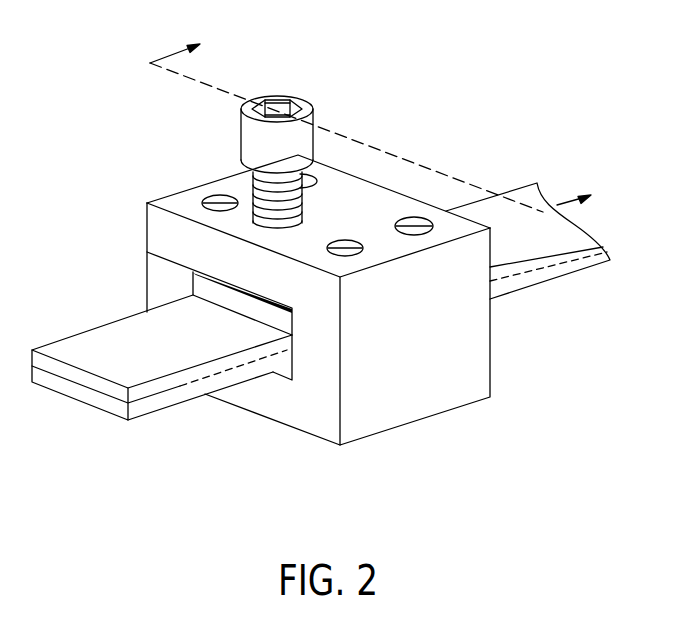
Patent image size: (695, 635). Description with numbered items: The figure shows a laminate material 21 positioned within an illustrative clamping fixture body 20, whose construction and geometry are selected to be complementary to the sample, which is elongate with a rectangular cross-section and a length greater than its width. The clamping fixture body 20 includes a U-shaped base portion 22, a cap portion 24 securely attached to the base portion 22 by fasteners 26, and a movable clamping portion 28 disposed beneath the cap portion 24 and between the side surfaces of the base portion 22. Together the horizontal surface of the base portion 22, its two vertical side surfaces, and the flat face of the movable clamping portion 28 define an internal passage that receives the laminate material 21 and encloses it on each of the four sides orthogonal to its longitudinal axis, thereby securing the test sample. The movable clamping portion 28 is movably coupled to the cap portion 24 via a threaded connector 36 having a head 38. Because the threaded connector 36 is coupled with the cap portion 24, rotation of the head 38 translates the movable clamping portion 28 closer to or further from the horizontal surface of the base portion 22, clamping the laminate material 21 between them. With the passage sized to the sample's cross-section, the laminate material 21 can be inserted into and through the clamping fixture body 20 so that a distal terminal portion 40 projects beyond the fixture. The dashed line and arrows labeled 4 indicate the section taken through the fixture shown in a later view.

The clamping fixture body 20 is at (158, 136).
The laminate material 21 is at (193, 394).
The U-shaped base portion 22 is at (378, 435).
The cap portion 24 is at (397, 190).
The fasteners 26 is at (228, 194).
The movable clamping portion 28 is at (190, 290).
The threaded connector 36 is at (313, 166).
The head 38 is at (278, 93).
The distal terminal portion 40 is at (152, 452).
The section line 4- 4 is at (377, 121).